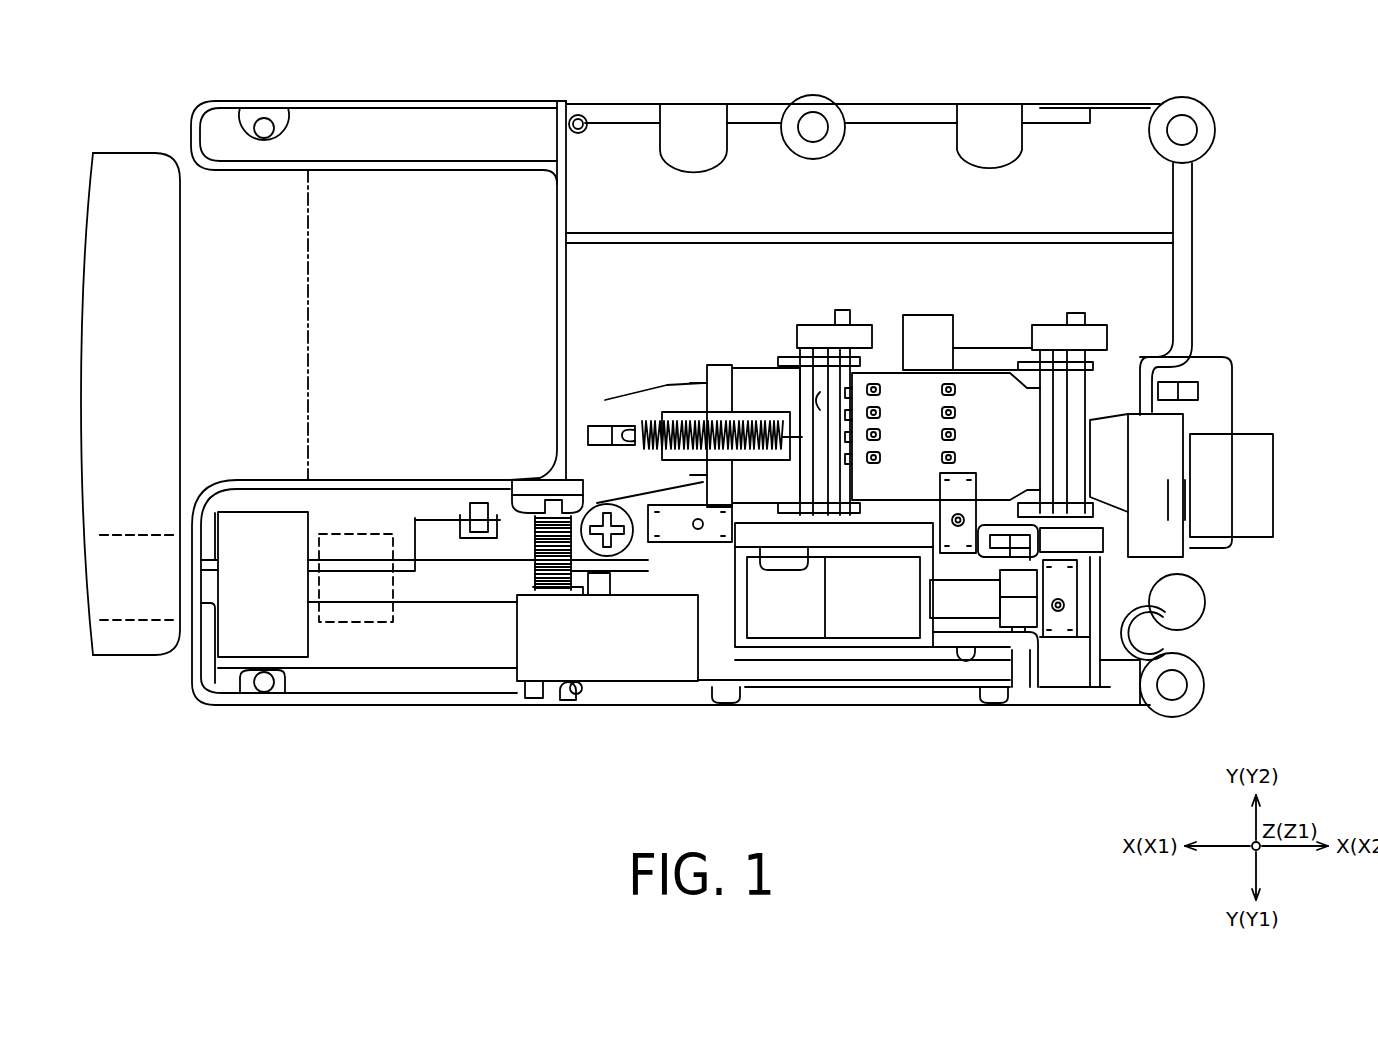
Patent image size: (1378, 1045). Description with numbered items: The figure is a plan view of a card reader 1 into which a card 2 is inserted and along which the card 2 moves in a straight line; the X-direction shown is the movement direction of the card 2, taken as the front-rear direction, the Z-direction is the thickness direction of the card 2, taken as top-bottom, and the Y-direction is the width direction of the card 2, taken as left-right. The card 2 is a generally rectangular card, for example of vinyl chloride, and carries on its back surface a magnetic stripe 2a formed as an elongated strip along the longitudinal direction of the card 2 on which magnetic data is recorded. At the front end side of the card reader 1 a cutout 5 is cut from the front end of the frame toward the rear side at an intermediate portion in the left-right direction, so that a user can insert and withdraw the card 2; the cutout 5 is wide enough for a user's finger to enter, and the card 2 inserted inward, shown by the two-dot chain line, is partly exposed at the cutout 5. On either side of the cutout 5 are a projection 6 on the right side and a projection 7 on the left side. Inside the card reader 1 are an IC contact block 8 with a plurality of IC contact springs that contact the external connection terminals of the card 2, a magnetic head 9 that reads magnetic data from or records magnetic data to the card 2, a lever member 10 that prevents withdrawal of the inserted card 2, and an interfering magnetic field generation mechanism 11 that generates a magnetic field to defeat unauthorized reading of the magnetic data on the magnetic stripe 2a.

The card reader 1 is at (1318, 58).
The card 2 is at (124, 153).
The magnetic stripe 2a is at (140, 535).
The cutout 5 is at (258, 227).
The projection 6 is at (410, 705).
The projection 7 is at (378, 101).
The IC contact block 8 is at (1004, 368).
The magnetic head 9 is at (360, 534).
The lever member 10 is at (628, 681).
The interfering magnetic field generation mechanism 11 is at (270, 513).